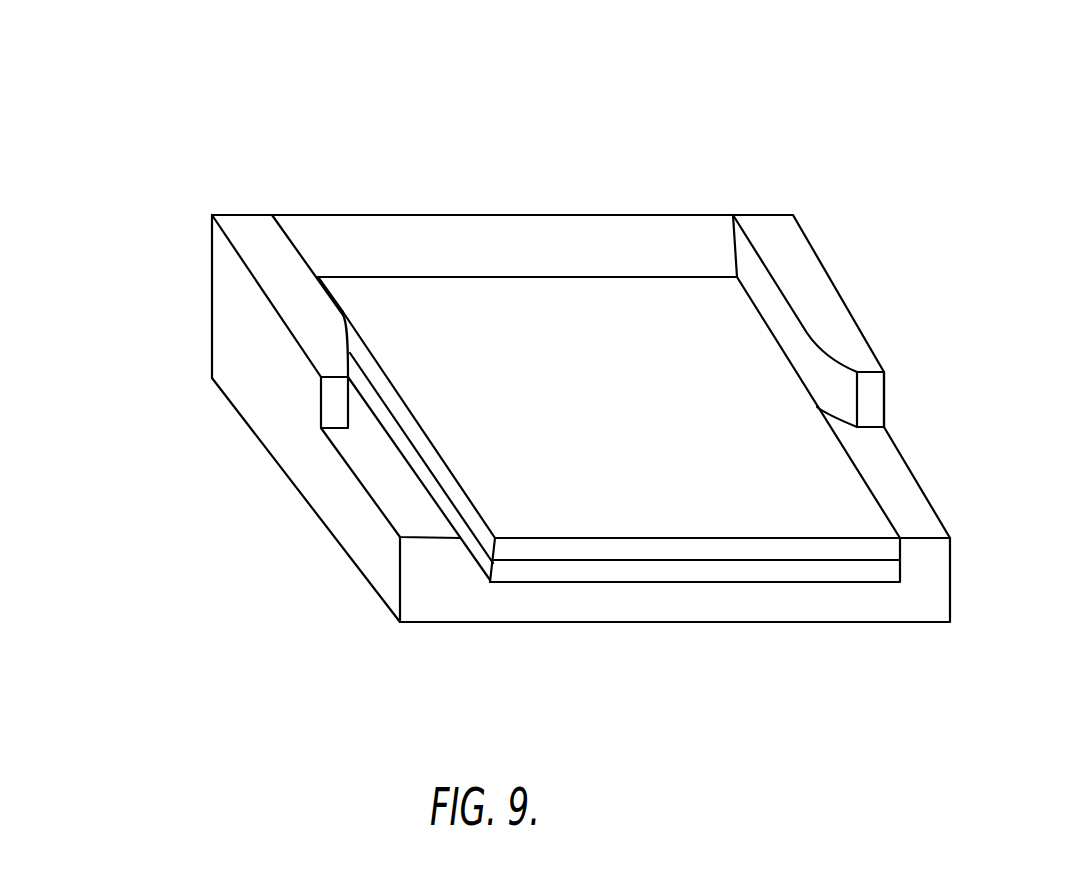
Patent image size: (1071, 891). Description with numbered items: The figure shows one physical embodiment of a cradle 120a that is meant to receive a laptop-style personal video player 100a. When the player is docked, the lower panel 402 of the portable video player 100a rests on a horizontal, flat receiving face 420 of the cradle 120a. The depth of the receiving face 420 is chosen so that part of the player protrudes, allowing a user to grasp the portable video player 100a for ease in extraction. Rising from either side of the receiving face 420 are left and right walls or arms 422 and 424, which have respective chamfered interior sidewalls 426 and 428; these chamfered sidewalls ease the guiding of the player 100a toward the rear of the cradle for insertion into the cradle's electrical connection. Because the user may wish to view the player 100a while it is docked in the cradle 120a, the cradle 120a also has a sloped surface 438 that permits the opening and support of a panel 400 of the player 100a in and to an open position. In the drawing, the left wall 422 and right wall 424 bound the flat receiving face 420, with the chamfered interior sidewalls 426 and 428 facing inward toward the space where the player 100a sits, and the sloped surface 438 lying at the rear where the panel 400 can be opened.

The cradle 120a is at (517, 373).
The personal video player 100a is at (655, 421).
The panel 400 is at (718, 550).
The lower panel 402 is at (718, 568).
The receiving face 420 is at (398, 475).
The left wall 422 is at (253, 233).
The right wall 424 is at (775, 222).
The chamfered interior sidewall 426 is at (348, 372).
The chamfered interior sidewall 428 is at (840, 380).
The sloped surface 438 is at (506, 232).